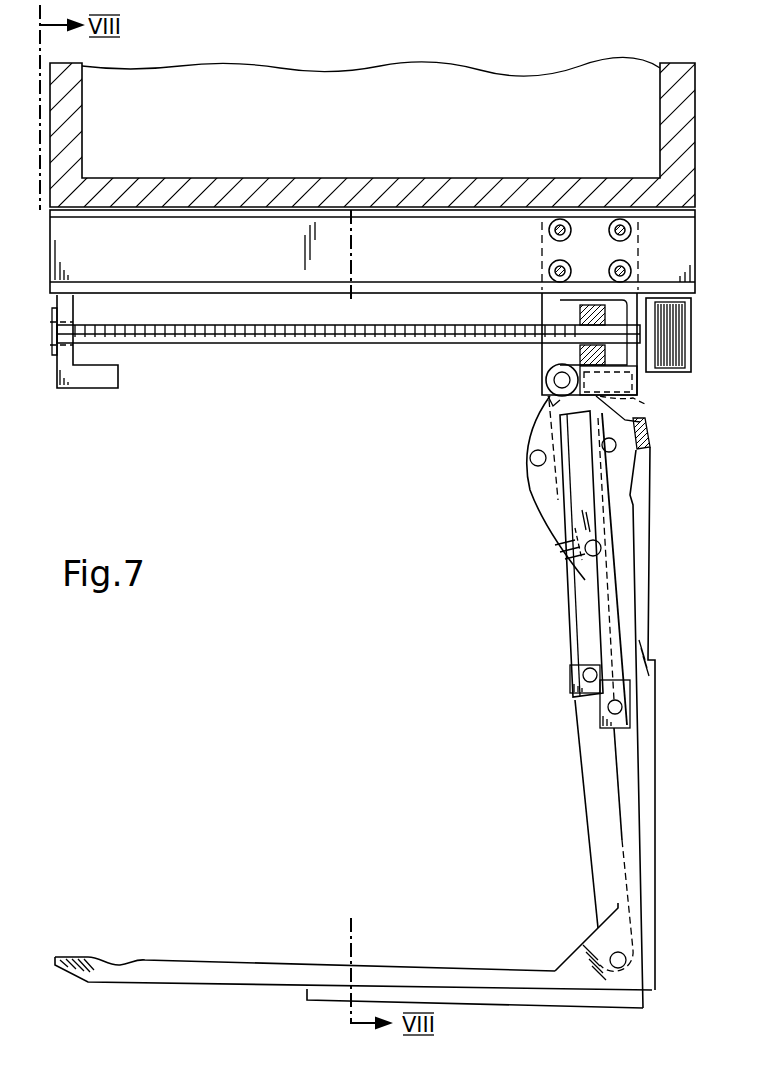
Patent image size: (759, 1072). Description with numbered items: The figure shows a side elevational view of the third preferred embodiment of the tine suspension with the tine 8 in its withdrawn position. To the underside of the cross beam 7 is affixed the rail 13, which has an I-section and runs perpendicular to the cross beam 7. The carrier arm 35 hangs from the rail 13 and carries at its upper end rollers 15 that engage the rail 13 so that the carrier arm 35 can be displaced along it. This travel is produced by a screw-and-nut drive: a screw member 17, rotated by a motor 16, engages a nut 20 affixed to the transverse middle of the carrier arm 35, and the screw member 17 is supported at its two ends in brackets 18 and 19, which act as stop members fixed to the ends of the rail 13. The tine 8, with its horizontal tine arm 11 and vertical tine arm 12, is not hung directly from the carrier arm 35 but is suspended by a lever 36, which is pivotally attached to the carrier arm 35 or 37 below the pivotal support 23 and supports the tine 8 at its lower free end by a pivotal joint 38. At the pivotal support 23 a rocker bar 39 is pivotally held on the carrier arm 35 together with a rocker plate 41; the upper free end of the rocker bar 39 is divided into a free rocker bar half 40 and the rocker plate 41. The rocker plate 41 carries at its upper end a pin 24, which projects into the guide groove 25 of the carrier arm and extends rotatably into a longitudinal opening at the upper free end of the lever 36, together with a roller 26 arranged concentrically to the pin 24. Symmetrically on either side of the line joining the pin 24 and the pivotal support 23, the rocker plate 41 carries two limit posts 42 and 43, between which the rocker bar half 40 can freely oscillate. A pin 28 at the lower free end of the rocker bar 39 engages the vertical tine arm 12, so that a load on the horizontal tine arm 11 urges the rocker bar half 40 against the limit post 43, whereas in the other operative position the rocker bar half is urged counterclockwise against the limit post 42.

The cross beam 7 is at (77, 123).
The tine 8 is at (545, 966).
The tine arm 11 is at (200, 967).
The tine arm 12 is at (640, 590).
The rail 13 is at (412, 260).
The rollers 15 is at (620, 220).
The motor 16 is at (683, 333).
The screw member 17 is at (324, 345).
The bracket 18 is at (103, 382).
The bracket 19 is at (632, 380).
The nut 20 is at (580, 353).
The pivotal support 23 is at (601, 548).
The pin 24 is at (554, 381).
The guide groove 25 is at (633, 398).
The roller 26 is at (548, 398).
The pin 28 is at (607, 709).
The carrier arm 35 is at (550, 313).
The lever 36 is at (600, 842).
The carrier arm 37 is at (583, 676).
The pivotal joint 38 is at (626, 958).
The rocker bar 39 is at (580, 605).
The rocker bar half 40 is at (583, 527).
The rocker plate 41 is at (538, 492).
The limit post 42 is at (530, 458).
The limit post 43 is at (616, 445).